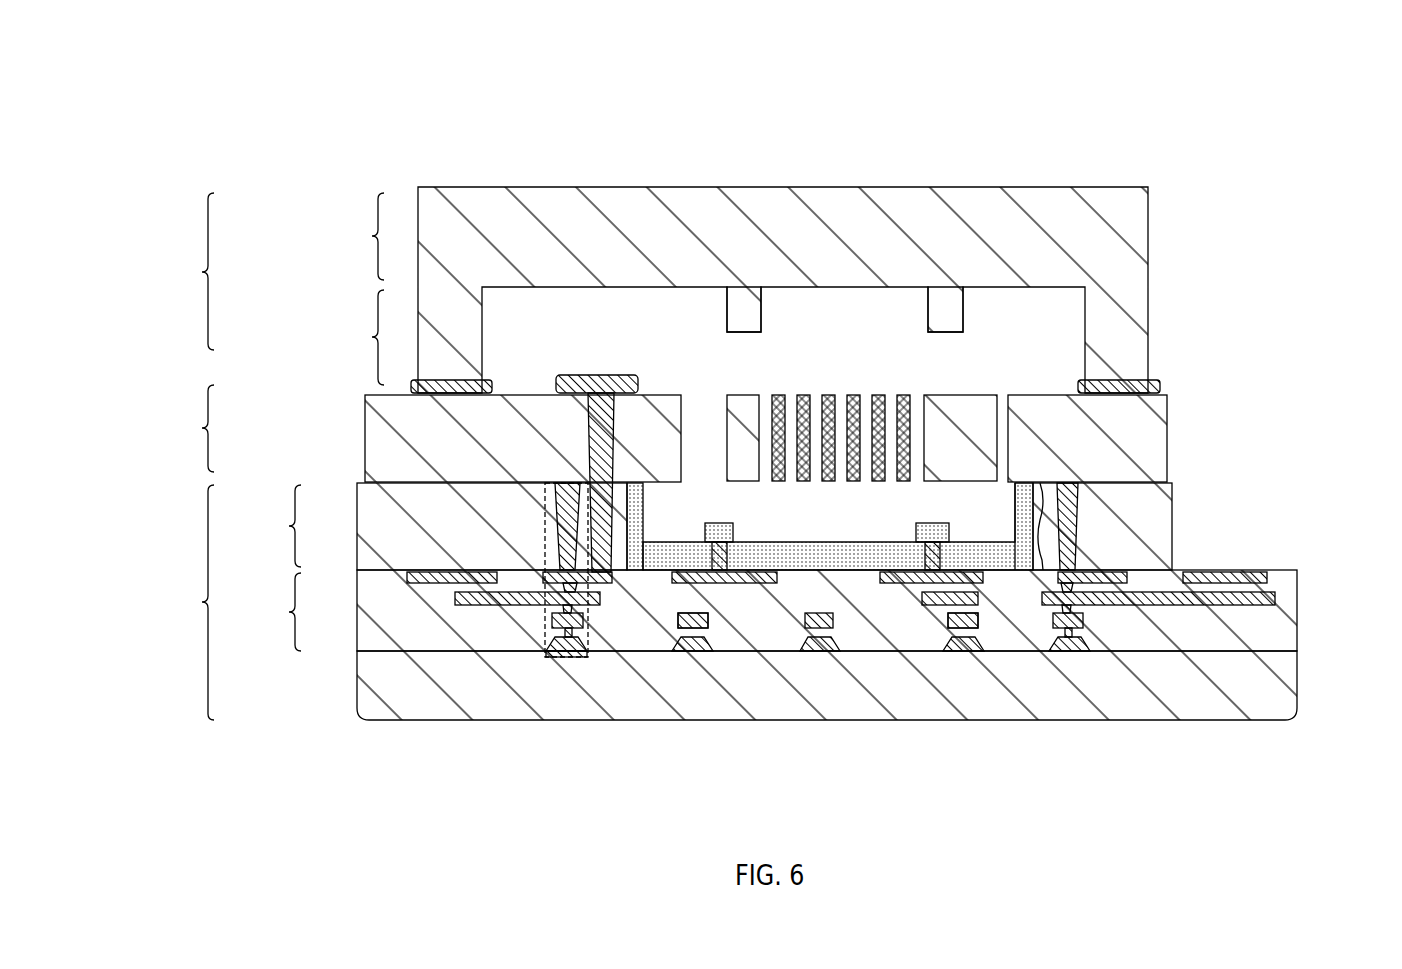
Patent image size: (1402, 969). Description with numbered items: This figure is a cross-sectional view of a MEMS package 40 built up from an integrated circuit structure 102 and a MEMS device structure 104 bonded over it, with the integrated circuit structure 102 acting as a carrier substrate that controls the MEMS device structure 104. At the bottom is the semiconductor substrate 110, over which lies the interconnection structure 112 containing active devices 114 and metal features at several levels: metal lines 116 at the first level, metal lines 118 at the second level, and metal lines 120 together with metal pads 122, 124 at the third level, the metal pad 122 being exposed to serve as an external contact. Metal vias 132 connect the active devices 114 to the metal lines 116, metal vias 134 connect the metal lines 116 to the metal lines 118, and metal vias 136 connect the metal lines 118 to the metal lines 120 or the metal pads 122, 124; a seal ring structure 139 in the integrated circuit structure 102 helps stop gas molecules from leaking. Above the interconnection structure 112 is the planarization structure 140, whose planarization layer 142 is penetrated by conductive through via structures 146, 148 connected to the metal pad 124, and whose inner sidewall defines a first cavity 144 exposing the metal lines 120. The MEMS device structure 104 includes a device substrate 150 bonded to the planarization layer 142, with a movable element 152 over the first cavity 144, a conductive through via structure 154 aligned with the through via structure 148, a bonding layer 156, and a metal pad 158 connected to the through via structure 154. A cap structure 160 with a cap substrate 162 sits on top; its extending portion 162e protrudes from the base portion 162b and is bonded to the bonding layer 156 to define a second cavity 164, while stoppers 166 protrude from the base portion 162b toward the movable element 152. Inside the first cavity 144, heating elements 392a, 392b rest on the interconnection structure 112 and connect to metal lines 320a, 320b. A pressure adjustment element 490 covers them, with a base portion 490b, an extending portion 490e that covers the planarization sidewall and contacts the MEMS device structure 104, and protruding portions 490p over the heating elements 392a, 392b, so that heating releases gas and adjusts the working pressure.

The MEMS package 40 is at (248, 126).
The integrated circuit structure 102 is at (182, 602).
The MEMS device structure 104 is at (182, 428).
The semiconductor substrate 110 is at (1265, 692).
The interconnection structure 112 is at (272, 612).
The active devices 114 is at (1092, 640).
The metal lines 116 is at (1083, 620).
The metal lines 118 is at (1270, 598).
The metal lines 120 is at (427, 575).
The metal pad 122 is at (1262, 577).
The metal pad 124 is at (607, 578).
The metal vias 132 is at (1065, 640).
The metal vias 134 is at (563, 610).
The metal vias 136 is at (1058, 592).
The seal ring structure 139 is at (558, 658).
The planarization structure 140 is at (272, 526).
The planarization layer 142 is at (1148, 497).
The first cavity 144 is at (846, 512).
The conductive through via structure 146 is at (573, 505).
The conductive through via structure 148 is at (603, 503).
The device substrate 150 is at (1140, 420).
The movable element 152 is at (816, 392).
The conductive through via structure 154 is at (600, 437).
The bonding layer 156 is at (1160, 387).
The metal pad 158 is at (565, 392).
The cap structure 160 is at (182, 271).
The cap substrate 162 is at (452, 205).
The base portion 162b is at (345, 236).
The extending portion 162e is at (345, 337).
The second cavity 164 is at (892, 358).
The stoppers 166 is at (742, 306).
The metal line 320a is at (907, 578).
The metal line 320b is at (685, 580).
The heating element 392a is at (932, 560).
The heating element 392b is at (718, 587).
The pressure adjustment element 490 is at (800, 560).
The base portion 490b is at (1045, 555).
The extending portion 490e is at (1068, 524).
The protruding portions 490p is at (722, 530).